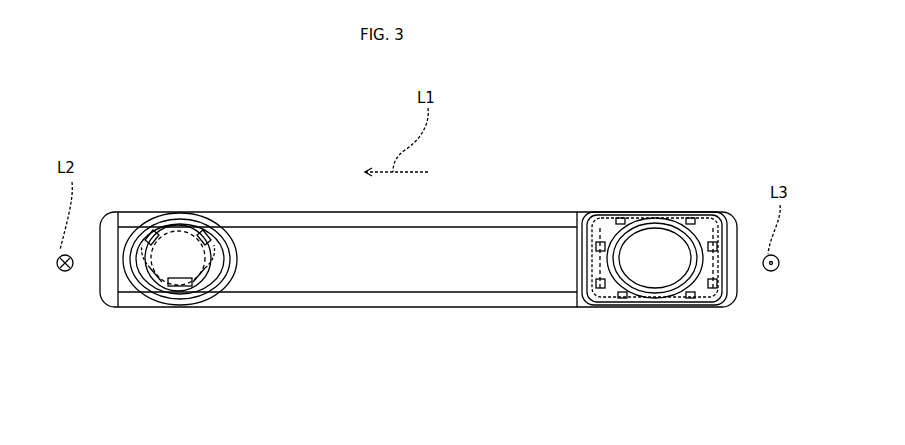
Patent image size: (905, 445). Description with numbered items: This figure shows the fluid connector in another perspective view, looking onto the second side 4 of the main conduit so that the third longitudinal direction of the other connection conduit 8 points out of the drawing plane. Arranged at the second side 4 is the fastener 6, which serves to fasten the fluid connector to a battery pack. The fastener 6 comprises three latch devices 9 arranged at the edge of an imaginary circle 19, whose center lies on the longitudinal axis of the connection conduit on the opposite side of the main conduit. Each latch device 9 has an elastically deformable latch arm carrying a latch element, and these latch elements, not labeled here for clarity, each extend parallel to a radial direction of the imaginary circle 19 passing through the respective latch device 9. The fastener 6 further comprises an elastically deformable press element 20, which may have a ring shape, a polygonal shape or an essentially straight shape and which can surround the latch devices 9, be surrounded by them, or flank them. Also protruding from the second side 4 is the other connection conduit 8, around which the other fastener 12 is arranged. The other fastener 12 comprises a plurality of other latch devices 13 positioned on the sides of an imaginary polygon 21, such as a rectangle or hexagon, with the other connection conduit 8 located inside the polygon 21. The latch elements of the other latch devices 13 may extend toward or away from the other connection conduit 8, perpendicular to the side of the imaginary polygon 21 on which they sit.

The second side 4 is at (392, 270).
The fastener 6 is at (178, 322).
The other connection conduit 8 is at (627, 248).
The latch device 9 is at (160, 240).
The other fastener 12 is at (686, 323).
The other latch device 13 is at (695, 297).
The imaginary circle 19 is at (160, 275).
The press element 20 is at (228, 266).
The imaginary polygon 21 is at (613, 297).